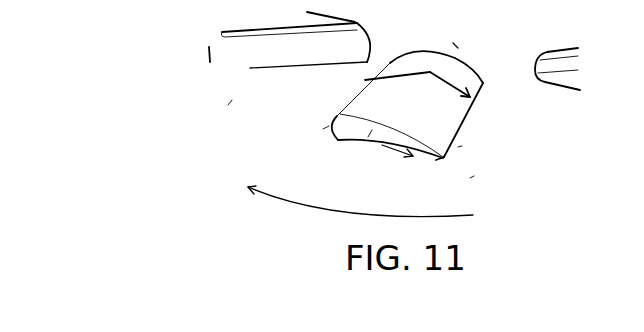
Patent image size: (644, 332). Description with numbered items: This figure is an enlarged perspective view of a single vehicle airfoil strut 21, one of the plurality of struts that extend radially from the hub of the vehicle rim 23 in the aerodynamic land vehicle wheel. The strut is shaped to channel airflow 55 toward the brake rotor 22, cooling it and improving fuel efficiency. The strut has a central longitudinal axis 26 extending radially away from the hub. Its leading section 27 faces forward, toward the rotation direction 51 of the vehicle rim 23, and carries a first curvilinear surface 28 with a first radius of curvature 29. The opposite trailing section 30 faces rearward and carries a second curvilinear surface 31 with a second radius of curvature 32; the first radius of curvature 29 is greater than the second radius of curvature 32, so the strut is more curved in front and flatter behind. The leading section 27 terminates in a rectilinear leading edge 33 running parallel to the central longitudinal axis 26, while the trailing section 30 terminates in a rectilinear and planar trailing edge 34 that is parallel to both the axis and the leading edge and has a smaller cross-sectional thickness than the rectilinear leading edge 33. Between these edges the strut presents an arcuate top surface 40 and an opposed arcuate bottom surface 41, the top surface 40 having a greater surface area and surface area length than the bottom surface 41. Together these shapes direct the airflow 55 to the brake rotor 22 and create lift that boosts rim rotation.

The vehicle airfoil strut 21 is at (470, 178).
The brake rotor 22 is at (555, 108).
The vehicle rim 23 is at (228, 105).
The central longitudinal axis 26 is at (352, 153).
The leading section 27 is at (323, 129).
The first curvilinear surface 28 is at (330, 129).
The first radius of curvature 29 is at (325, 126).
The trailing section 30 is at (458, 147).
The second curvilinear surface 31 is at (443, 145).
The second radius of curvature 32 is at (435, 160).
The rectilinear leading edge 33 is at (345, 108).
The rectilinear and planar trailing edge 34 is at (445, 150).
The arcuate top surface 40 is at (427, 58).
The arcuate bottom surface 41 is at (370, 138).
The rotation direction 51 is at (303, 202).
The airflow 55 is at (370, 133).